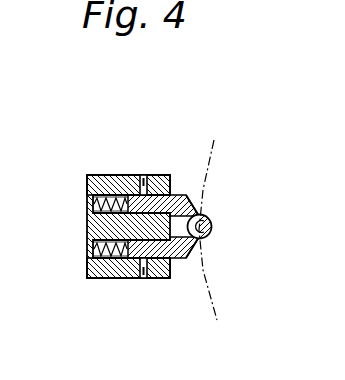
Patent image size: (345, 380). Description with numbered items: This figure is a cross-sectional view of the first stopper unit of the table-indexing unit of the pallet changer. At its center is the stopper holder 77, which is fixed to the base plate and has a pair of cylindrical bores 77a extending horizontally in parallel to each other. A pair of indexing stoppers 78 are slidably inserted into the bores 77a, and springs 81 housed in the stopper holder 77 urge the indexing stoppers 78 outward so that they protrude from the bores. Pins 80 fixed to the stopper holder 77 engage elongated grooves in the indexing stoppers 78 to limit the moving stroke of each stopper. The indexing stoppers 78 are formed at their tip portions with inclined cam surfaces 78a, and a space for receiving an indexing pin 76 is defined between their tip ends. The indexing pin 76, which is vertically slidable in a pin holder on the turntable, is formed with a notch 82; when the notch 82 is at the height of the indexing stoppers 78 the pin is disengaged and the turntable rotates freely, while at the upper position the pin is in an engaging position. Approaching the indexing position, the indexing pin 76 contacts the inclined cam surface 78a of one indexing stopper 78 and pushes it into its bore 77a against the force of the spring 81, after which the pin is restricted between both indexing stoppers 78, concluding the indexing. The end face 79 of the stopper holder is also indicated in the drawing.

The indexing pin 76 is at (212, 227).
The stopper holder 77 is at (95, 175).
The cylindrical bore 77a is at (113, 196).
The indexing stopper 78 is at (158, 200).
The inclined cam surface 78a is at (199, 210).
The end faces of holder 79 is at (172, 176).
The pin 80 is at (141, 177).
The spring 81 is at (93, 199).
The notch 82 is at (204, 217).